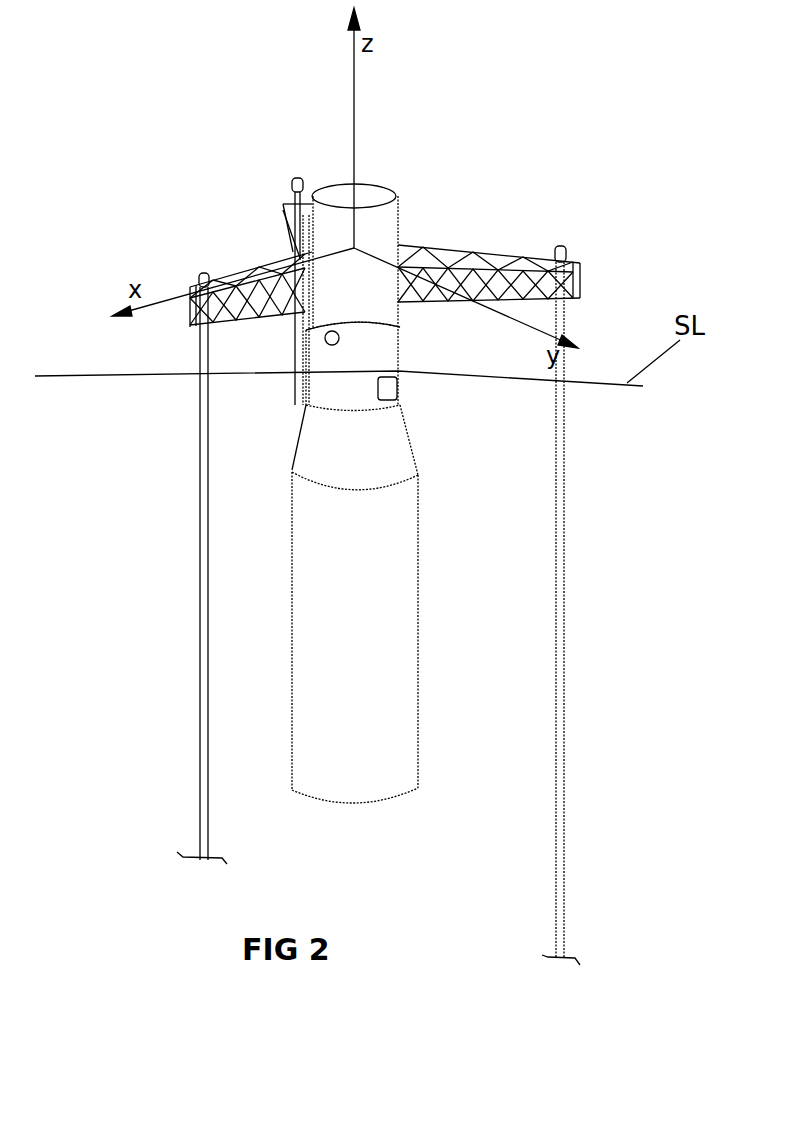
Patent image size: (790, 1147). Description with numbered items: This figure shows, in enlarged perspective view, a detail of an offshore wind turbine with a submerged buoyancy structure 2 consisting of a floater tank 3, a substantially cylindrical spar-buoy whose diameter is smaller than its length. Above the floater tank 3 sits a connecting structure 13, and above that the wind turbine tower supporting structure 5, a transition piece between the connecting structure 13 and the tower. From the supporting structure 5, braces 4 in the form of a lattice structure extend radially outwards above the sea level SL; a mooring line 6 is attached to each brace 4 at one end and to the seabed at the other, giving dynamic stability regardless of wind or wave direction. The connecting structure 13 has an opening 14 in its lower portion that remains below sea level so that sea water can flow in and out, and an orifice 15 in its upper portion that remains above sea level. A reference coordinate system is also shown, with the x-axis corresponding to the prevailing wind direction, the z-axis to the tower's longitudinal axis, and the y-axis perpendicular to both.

The buoyancy structure 2 is at (257, 702).
The floater tank 3 is at (375, 652).
The brace 4 is at (296, 215).
The wind turbine tower supporting structure 5 is at (388, 222).
The mooring line 6 is at (292, 336).
The connecting structure 13 is at (402, 356).
The opening 14 is at (410, 392).
The orifice 15 is at (327, 344).